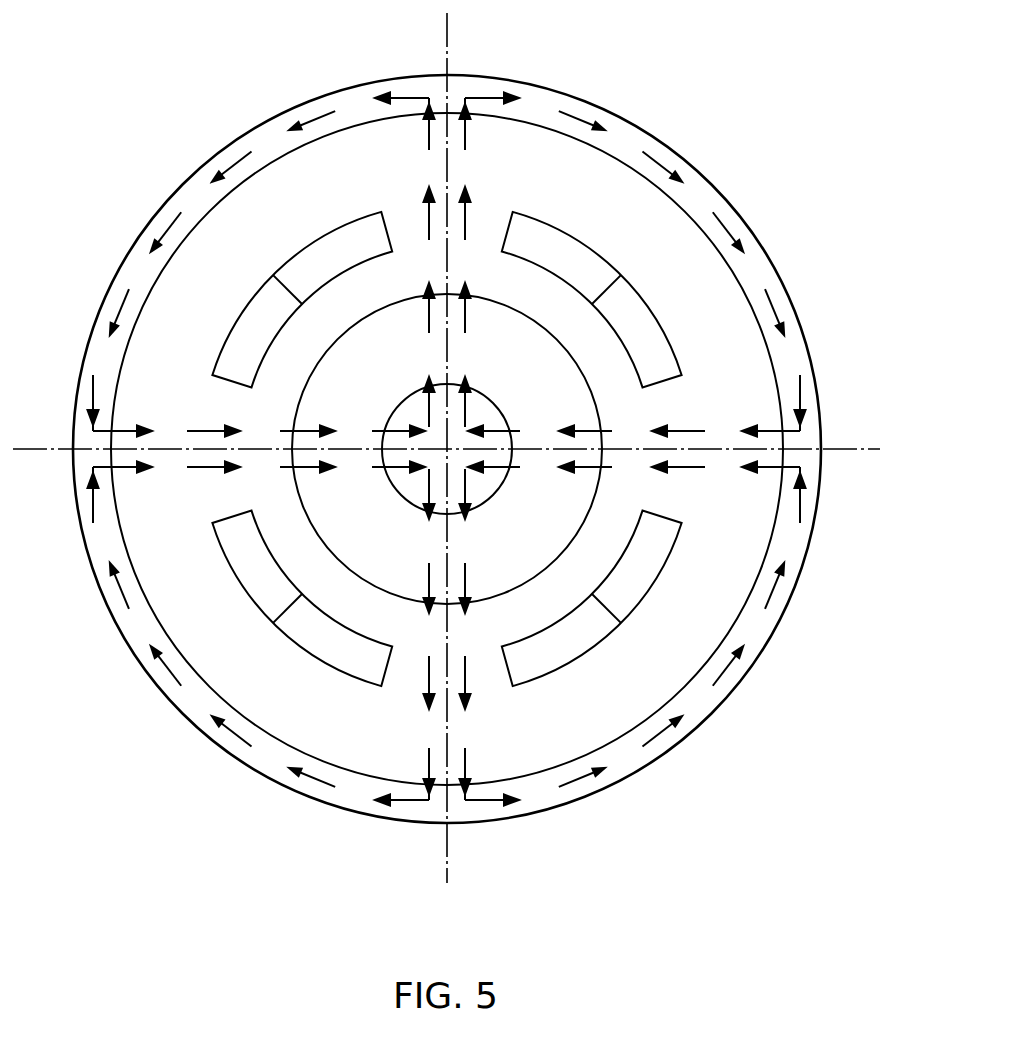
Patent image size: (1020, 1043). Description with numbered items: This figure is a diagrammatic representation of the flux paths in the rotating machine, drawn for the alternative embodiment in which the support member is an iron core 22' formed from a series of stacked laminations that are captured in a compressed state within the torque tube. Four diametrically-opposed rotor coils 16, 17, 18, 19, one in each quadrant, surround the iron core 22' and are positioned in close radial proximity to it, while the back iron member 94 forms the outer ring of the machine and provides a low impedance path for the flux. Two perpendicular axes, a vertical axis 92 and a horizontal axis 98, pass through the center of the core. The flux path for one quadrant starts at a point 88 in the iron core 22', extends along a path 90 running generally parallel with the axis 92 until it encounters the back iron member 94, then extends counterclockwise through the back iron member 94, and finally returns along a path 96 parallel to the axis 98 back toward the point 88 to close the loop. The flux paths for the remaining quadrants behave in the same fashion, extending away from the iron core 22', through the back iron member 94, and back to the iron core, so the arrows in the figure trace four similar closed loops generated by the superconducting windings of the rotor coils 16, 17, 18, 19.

The rotor coil 16 is at (560, 243).
The rotor coil 17 is at (240, 347).
The rotor coil 18 is at (337, 650).
The rotor coil 19 is at (650, 560).
The iron core 22' is at (578, 449).
The point 88 is at (423, 408).
The path 90 is at (467, 213).
The axis 92 is at (448, 55).
The back iron member 94 is at (690, 192).
The path 96 is at (202, 427).
The axis 98 is at (847, 449).